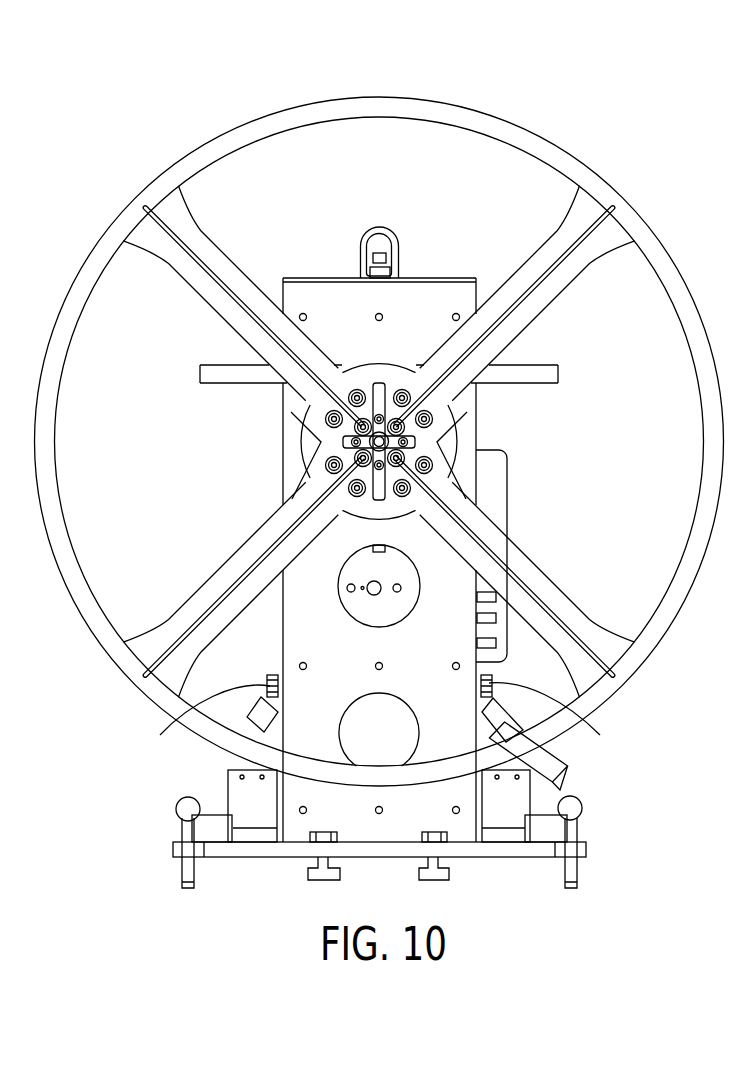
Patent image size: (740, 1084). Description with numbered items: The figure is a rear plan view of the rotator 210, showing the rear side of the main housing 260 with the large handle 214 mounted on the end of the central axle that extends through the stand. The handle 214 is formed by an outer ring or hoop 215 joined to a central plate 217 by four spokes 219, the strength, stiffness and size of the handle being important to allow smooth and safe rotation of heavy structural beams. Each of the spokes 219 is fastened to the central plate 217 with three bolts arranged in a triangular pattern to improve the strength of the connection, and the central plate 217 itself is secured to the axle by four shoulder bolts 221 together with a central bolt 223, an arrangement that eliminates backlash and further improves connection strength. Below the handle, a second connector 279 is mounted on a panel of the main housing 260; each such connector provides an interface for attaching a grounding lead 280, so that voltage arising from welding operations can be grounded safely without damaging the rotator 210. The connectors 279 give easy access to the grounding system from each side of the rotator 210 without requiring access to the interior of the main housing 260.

The rotator 210 is at (657, 139).
The handle 214 is at (475, 111).
The outer ring or hoop 215 is at (296, 118).
The central plate 217 is at (453, 440).
The spokes 219 is at (548, 297).
The shoulder bolts 221 is at (345, 440).
The central bolt 223 is at (413, 440).
The main housing 260 is at (453, 288).
The second connector 279 is at (381, 713).
The grounding lead 280 is at (547, 770).